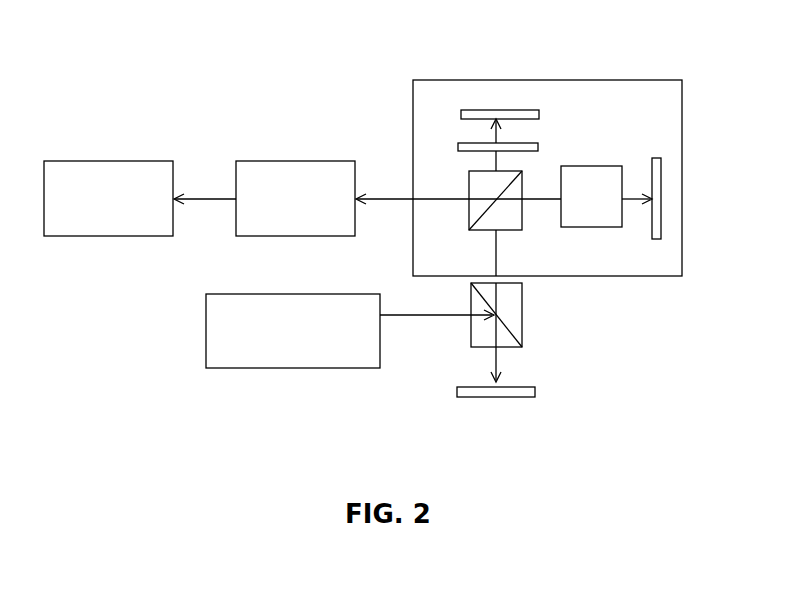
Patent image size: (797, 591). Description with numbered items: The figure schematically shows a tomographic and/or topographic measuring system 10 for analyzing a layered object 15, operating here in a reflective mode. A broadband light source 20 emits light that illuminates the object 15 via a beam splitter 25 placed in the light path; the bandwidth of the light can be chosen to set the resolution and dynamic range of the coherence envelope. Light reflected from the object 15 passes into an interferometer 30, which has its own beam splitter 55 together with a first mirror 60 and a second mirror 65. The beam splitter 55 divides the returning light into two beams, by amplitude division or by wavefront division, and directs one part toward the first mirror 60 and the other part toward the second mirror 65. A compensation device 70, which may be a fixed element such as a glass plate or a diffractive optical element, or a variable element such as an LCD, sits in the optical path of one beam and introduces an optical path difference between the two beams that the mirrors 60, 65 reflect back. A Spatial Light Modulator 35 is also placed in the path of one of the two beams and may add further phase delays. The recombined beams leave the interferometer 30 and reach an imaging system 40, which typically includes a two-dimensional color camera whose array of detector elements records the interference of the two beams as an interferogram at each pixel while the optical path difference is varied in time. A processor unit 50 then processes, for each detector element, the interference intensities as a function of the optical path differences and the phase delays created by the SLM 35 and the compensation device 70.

The tomographic and/or topographic measuring system 10 is at (534, 490).
The layered object 15 is at (490, 397).
The broadband light source 20 is at (206, 346).
The beam splitter 25 is at (471, 340).
The interferometer 30 is at (459, 80).
The Spatial Light Modulator (SLM) 35 is at (538, 147).
The imaging system 40 is at (250, 161).
The processor unit 50 is at (62, 161).
The beam splitter 55 is at (469, 210).
The first mirror 60 is at (661, 218).
The second mirror 65 is at (510, 110).
The compensation device 70 is at (578, 227).